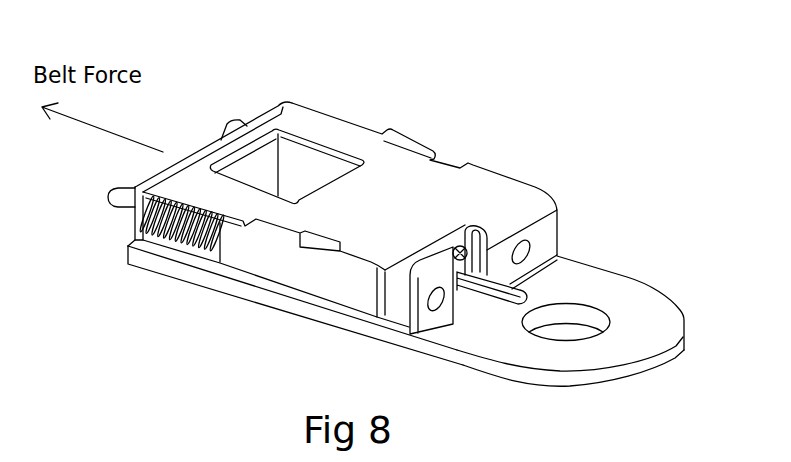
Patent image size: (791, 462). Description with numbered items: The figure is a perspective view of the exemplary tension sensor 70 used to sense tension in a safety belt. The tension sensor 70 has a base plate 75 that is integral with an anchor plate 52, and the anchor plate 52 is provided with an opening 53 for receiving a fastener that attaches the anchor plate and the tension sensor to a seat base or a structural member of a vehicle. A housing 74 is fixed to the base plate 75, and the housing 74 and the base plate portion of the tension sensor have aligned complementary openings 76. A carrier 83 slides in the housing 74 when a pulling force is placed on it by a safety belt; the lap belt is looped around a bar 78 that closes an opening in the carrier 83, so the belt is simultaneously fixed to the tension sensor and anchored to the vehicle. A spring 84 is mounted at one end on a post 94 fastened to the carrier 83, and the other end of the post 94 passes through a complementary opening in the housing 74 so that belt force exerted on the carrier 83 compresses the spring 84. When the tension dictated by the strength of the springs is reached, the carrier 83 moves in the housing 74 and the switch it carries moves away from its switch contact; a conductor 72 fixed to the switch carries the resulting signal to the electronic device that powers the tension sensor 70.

The anchor plate 52 is at (630, 291).
The opening 53 is at (567, 334).
The tension sensor 70 is at (268, 298).
The conductor 72 is at (558, 254).
The housing 74 is at (498, 185).
The base plate 75 is at (218, 282).
The openings 76 is at (304, 164).
The bar 78 is at (262, 144).
The carrier 83 is at (333, 287).
The spring 84 is at (155, 242).
The post 94 is at (120, 198).